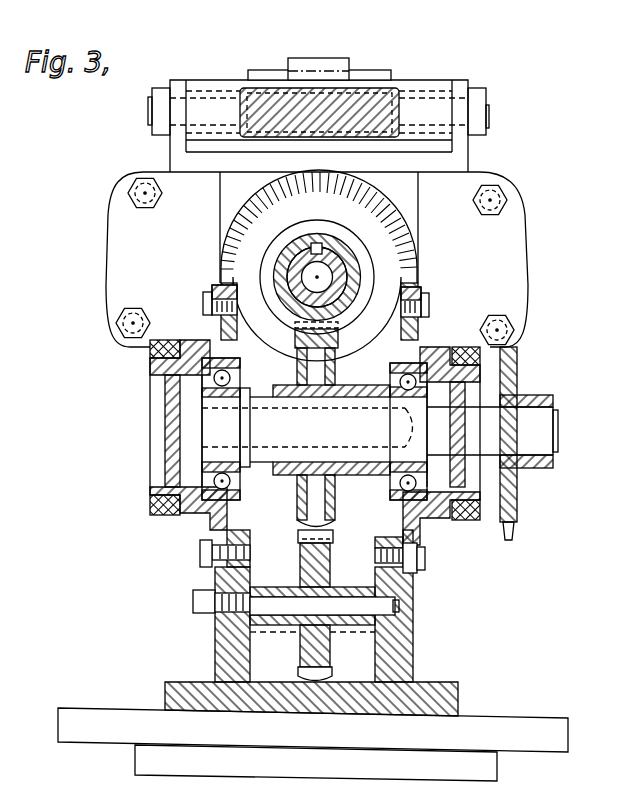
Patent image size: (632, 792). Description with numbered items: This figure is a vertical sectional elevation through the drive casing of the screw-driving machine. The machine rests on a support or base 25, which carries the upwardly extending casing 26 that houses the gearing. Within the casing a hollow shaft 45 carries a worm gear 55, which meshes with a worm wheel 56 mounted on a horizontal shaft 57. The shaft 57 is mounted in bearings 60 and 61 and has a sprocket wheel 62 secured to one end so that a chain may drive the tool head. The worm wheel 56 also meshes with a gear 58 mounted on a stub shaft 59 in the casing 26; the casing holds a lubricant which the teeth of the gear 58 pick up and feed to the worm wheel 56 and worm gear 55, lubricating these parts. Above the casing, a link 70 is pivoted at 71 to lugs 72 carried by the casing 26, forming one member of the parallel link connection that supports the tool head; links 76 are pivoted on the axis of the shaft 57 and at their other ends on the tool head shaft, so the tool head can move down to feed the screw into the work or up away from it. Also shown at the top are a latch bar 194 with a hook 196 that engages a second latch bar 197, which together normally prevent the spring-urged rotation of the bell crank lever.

The support or base 25 is at (558, 713).
The casing 26 is at (415, 652).
The hollow shaft 45 is at (300, 298).
The worm gear 55 is at (343, 232).
The worm wheel 56 is at (338, 333).
The shaft 57 is at (300, 455).
The gear 58 is at (298, 673).
The stub shaft 59 is at (355, 605).
The bearing 60 is at (217, 477).
The bearing 61 is at (408, 483).
The sprocket wheel 62 is at (515, 532).
The link 70 is at (388, 108).
The pivot 71 is at (218, 110).
The lugs 72 is at (172, 144).
The links 76 is at (163, 512).
The latch bar 194 is at (329, 56).
The hook 196 is at (295, 70).
The latch bar 197 is at (364, 70).